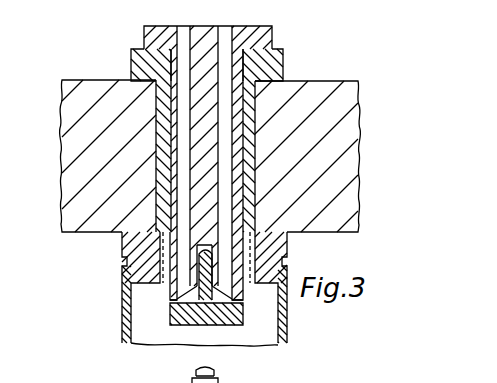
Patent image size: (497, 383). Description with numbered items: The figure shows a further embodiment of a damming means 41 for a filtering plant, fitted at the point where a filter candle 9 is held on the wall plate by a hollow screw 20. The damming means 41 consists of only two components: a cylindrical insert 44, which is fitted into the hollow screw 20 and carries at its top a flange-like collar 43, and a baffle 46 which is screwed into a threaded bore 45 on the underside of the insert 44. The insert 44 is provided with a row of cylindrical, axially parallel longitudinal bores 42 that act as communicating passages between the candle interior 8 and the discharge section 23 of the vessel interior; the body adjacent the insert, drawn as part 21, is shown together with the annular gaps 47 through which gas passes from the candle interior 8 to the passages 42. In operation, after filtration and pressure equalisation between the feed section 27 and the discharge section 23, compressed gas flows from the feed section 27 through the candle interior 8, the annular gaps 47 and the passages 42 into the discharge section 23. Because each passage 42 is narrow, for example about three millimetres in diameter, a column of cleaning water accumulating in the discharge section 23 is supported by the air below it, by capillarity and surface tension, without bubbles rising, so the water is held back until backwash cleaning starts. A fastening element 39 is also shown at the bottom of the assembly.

The candle interior 8 is at (152, 333).
The filter candle 9 is at (123, 333).
The hollow screw 20 is at (88, 160).
The right body block 21 is at (268, 74).
The discharge section 23 is at (90, 78).
The feed section 27 is at (88, 257).
The bolt 39 is at (225, 380).
The damming means 41 is at (143, 37).
The longitudinal bores 42 is at (183, 72).
The flange-like collar 43 is at (255, 42).
The cylindrical insert 44 is at (205, 33).
The threaded bore 45 is at (200, 279).
The baffle 46 is at (182, 327).
The annular gaps 47 is at (196, 290).